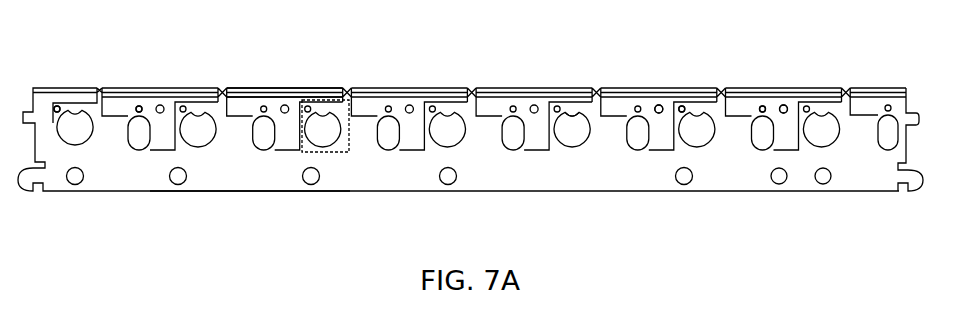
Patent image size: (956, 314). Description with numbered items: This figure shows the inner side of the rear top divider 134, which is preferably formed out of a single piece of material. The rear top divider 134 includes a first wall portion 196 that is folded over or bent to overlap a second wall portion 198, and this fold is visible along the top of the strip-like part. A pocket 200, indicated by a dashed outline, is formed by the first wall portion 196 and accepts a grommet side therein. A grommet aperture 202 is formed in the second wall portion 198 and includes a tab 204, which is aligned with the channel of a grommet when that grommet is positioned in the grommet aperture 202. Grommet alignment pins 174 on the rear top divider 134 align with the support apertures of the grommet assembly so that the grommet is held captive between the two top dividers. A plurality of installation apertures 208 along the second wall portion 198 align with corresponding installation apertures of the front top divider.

The rear top divider 134 is at (376, 89).
The grommet alignment pins 174 is at (141, 106).
The first wall portion 196 is at (244, 90).
The second wall portion 198 is at (245, 183).
The pocket 200 is at (345, 154).
The grommet aperture 202 is at (587, 151).
The tab 204 is at (573, 101).
The installation apertures 208 is at (773, 102).